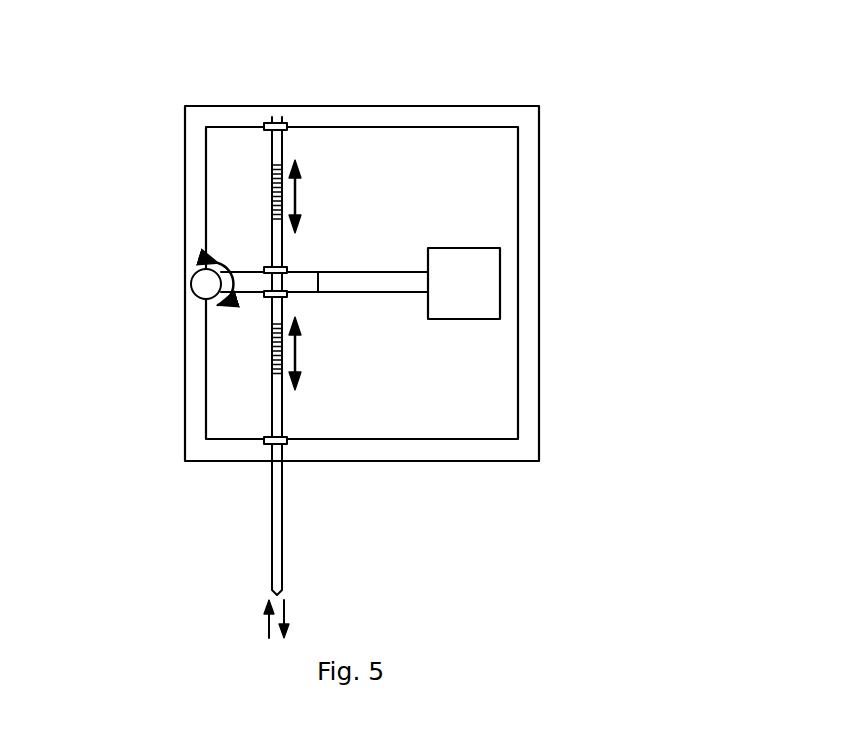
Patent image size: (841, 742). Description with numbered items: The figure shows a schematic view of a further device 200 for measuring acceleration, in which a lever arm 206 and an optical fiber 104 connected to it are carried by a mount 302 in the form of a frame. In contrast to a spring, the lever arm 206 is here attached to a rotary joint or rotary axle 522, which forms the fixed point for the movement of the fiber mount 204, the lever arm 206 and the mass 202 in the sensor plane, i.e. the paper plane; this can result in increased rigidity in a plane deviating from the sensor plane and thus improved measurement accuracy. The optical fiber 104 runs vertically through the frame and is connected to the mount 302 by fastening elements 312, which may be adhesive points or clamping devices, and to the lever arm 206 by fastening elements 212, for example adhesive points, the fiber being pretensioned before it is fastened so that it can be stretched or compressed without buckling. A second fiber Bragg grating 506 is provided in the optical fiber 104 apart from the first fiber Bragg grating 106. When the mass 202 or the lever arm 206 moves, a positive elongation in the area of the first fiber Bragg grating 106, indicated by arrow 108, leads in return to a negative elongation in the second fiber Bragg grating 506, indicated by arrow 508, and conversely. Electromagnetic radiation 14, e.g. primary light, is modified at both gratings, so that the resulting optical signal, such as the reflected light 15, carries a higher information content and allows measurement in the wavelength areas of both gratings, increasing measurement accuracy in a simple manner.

The actuation system 200 is at (647, 67).
The mount 302 is at (398, 100).
The lever arm 206 is at (362, 283).
The mass 202 is at (475, 312).
The fiber mount 204 is at (253, 291).
The rotary axle 522 is at (198, 287).
The optical fiber 104 is at (279, 553).
The second fiber Bragg grating 506 is at (264, 204).
The first fiber Bragg grating 106 is at (264, 350).
The fastening elements 312 is at (287, 130).
The fastening element 212 is at (284, 270).
The arrow 508 is at (298, 193).
The arrow 108 is at (298, 353).
The electromagnetic radiation 14 is at (265, 622).
The reflected light 15 is at (288, 612).